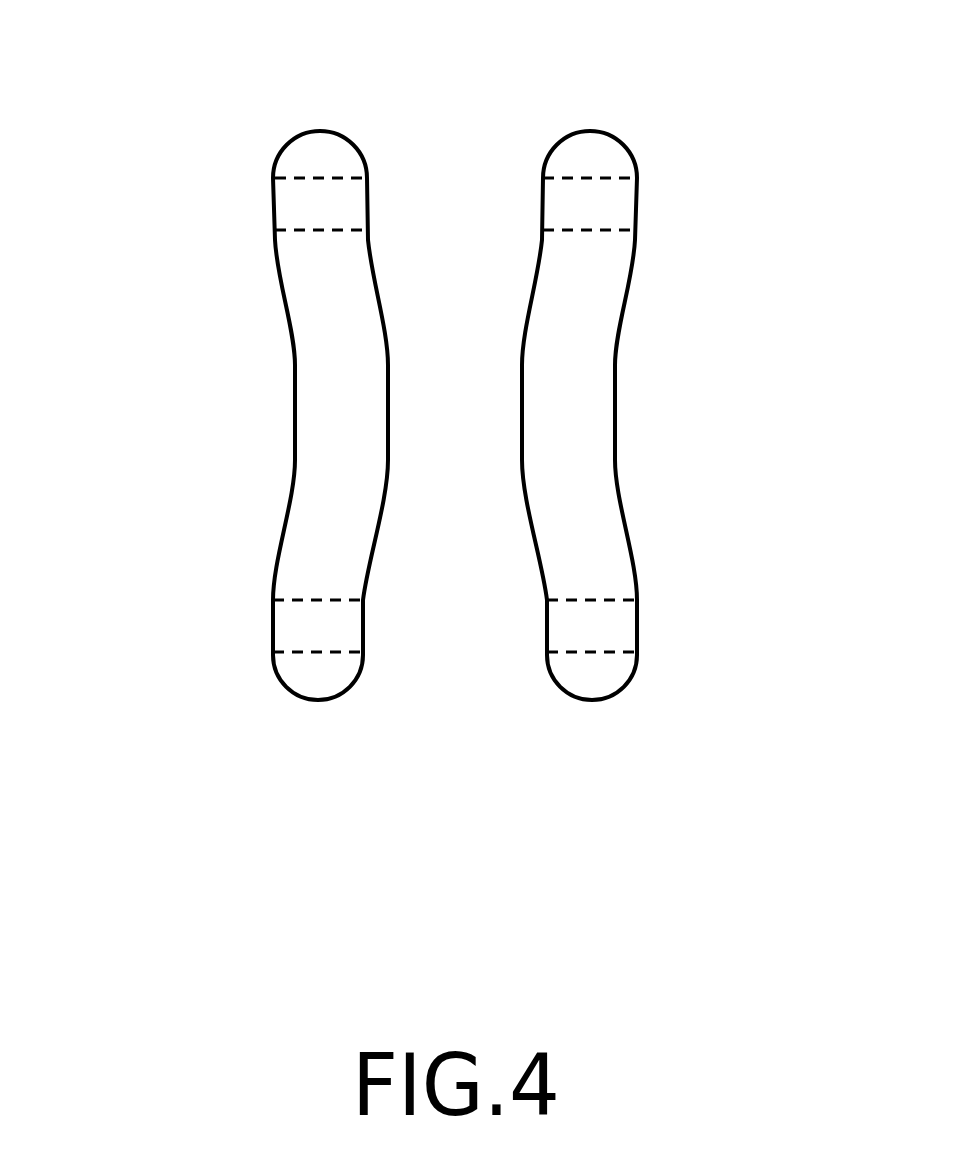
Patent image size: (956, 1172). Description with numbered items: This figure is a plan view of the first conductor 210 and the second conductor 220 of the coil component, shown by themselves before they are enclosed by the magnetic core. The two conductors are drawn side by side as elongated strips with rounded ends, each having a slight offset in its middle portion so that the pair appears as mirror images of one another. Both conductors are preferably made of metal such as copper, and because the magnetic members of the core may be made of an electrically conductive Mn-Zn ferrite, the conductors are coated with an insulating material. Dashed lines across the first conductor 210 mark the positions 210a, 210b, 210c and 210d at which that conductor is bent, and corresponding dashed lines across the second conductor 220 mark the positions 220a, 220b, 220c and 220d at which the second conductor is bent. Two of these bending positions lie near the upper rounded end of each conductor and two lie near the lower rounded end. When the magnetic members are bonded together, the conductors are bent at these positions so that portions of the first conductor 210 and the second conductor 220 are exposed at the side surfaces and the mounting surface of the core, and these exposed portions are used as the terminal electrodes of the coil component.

The first conductor 210 is at (314, 133).
The bending position of first conductor 210a is at (301, 179).
The bending position of first conductor 210b is at (303, 235).
The bending position of first conductor 210c is at (325, 598).
The bending position of first conductor 210d is at (330, 662).
The second conductor 220 is at (596, 133).
The bending position of second conductor 220a is at (609, 179).
The bending position of second conductor 220b is at (607, 235).
The bending position of second conductor 220c is at (585, 598).
The bending position of second conductor 220d is at (580, 662).